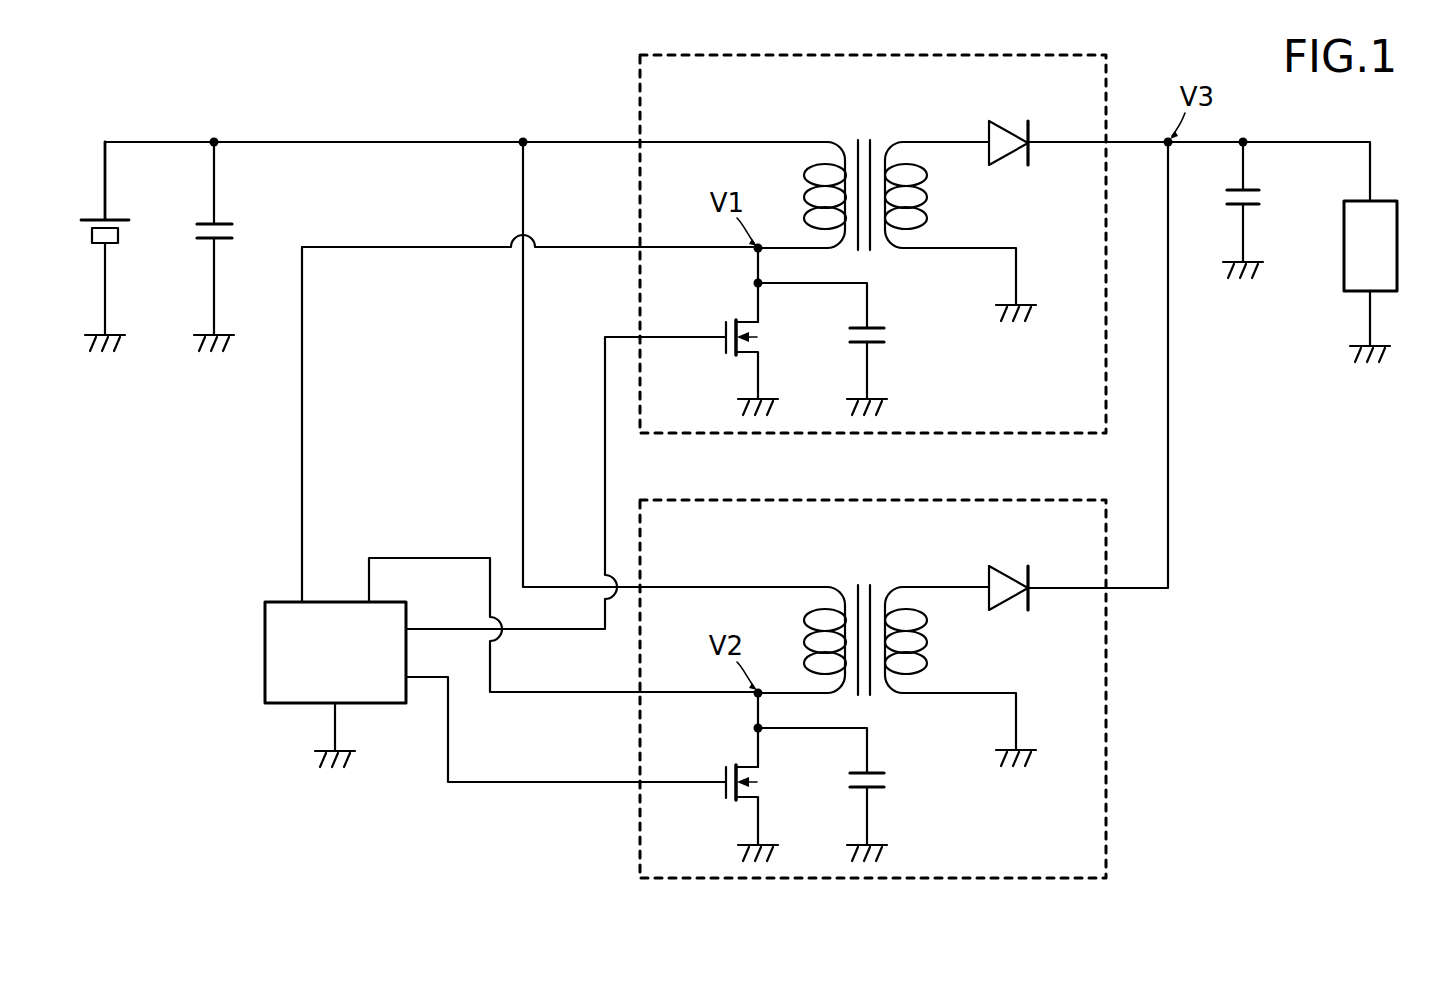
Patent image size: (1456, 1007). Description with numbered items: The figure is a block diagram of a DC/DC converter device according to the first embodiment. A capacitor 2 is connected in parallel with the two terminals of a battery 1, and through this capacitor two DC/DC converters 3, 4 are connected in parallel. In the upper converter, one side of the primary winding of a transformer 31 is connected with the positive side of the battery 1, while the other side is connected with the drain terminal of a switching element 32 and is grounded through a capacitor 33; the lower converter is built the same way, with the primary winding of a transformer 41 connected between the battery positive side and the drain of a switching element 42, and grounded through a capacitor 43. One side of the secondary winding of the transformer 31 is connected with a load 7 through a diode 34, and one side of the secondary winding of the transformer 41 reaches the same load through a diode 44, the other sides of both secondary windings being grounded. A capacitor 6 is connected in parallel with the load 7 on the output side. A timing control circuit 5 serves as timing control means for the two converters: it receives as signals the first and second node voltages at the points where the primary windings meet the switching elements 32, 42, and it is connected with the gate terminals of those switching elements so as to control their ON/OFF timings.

The battery 1 is at (135, 233).
The capacitor 2 is at (243, 233).
The DC/DC converter 3 is at (740, 57).
The transformer 31 is at (864, 131).
The switching element 32 is at (765, 337).
The capacitor 33 is at (886, 337).
The diode 34 is at (1013, 124).
The DC/DC converter 4 is at (738, 501).
The transformer 41 is at (864, 576).
The switching element 42 is at (765, 782).
The capacitor 43 is at (886, 782).
The diode 44 is at (1013, 567).
The timing control circuit 5 is at (265, 629).
The capacitor 6 is at (1265, 198).
The load 7 is at (1399, 222).